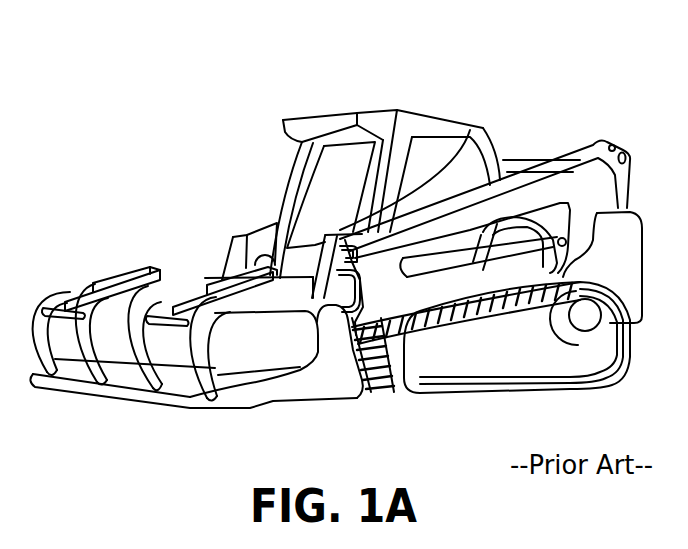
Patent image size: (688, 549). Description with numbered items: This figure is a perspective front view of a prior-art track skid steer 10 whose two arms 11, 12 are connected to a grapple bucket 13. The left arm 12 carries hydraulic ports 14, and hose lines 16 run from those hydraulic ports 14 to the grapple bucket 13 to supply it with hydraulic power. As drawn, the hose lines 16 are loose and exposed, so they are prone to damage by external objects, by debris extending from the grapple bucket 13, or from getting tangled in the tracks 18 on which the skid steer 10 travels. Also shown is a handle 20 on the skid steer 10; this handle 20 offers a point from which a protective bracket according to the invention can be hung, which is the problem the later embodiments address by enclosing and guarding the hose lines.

The track skid steer 10 is at (437, 79).
The arm 11 is at (235, 260).
The left arm 12 is at (344, 237).
The grapple bucket 13 is at (283, 392).
The hydraulic ports 14 is at (357, 273).
The hose lines 16 is at (402, 382).
The tracks 18 is at (572, 385).
The handle 20 is at (483, 127).